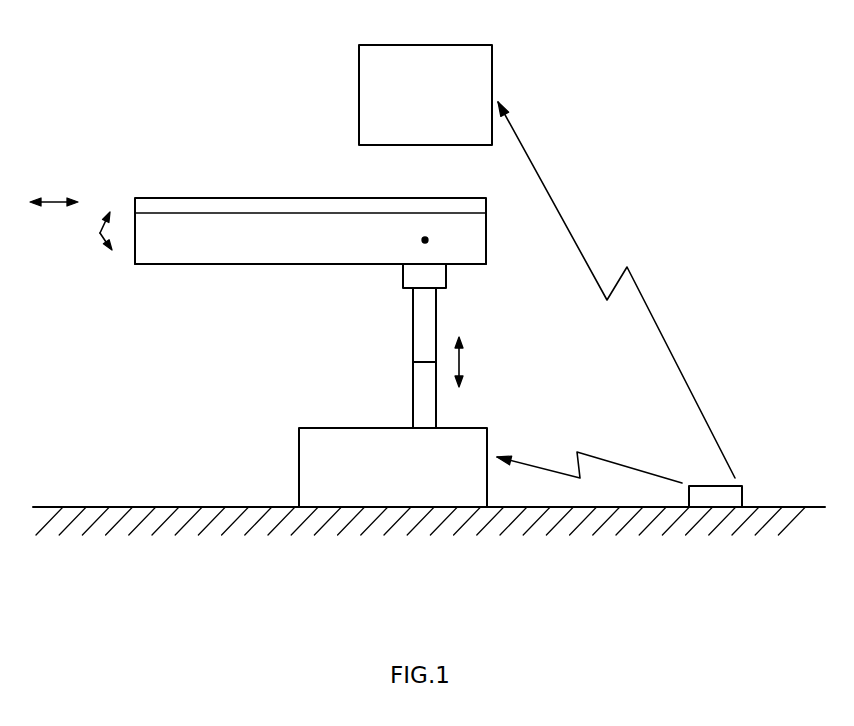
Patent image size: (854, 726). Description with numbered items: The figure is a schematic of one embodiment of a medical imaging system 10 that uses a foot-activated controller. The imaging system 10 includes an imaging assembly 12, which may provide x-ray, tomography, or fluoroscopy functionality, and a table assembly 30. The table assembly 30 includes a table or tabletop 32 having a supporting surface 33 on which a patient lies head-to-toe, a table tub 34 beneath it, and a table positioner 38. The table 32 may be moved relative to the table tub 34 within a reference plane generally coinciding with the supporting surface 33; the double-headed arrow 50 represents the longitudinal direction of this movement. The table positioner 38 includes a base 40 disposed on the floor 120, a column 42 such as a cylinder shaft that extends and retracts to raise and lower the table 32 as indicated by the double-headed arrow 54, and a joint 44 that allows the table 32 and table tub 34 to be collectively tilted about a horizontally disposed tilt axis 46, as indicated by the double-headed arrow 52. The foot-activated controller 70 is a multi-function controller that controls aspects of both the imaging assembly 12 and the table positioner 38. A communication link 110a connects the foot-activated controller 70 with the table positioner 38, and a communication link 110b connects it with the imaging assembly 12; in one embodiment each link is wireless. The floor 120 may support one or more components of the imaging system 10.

The imaging system 10 is at (720, 131).
The imaging assembly 12 is at (425, 95).
The table assembly 30 is at (138, 120).
The table 32 is at (283, 210).
The supporting surface 33 is at (185, 198).
The table tub 34 is at (230, 265).
The table positioner 38 is at (158, 361).
The base 40 is at (393, 467).
The column 42 is at (413, 330).
The joint 44 is at (403, 268).
The tilt axis 46 is at (425, 240).
The double-headed arrow 50 is at (55, 202).
The double-headed arrow 52 is at (100, 233).
The double-headed arrow 54 is at (471, 347).
The foot-activated controller 70 is at (742, 490).
The communication link 110a is at (627, 467).
The communication link 110b is at (665, 337).
The floor 120 is at (92, 507).